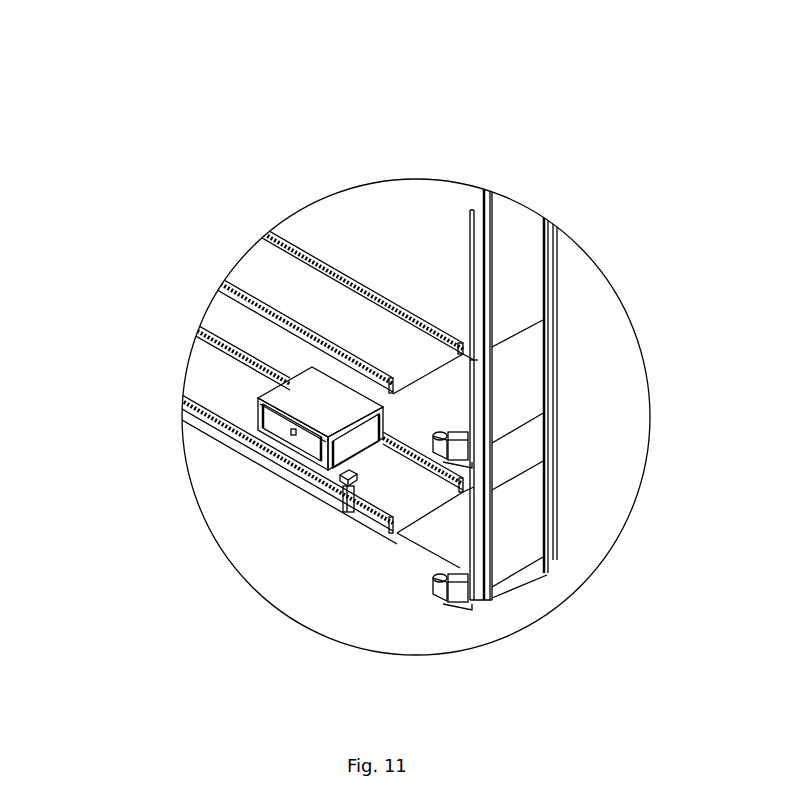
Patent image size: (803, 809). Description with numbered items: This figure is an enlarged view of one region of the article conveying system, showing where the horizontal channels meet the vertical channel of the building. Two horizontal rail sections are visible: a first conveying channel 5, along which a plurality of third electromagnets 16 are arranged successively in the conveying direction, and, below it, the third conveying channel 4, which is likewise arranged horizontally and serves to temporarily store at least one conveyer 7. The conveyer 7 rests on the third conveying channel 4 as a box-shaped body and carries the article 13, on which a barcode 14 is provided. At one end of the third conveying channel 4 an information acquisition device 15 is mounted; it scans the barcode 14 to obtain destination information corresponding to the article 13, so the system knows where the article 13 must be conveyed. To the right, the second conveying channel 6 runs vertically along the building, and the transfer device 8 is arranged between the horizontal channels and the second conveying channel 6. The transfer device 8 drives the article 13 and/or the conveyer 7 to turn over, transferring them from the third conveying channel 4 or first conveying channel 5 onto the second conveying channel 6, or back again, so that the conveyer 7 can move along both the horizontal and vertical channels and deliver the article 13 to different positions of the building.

The third conveying channel 4 is at (259, 440).
The first conveying channel 5 is at (265, 272).
The second conveying channel 6 is at (601, 390).
The conveyer 7 is at (219, 466).
The transfer device 8 is at (515, 571).
The article 13 is at (179, 544).
The barcode 14 is at (230, 572).
The information acquisition device 15 is at (377, 592).
The third electromagnet 16 is at (296, 227).